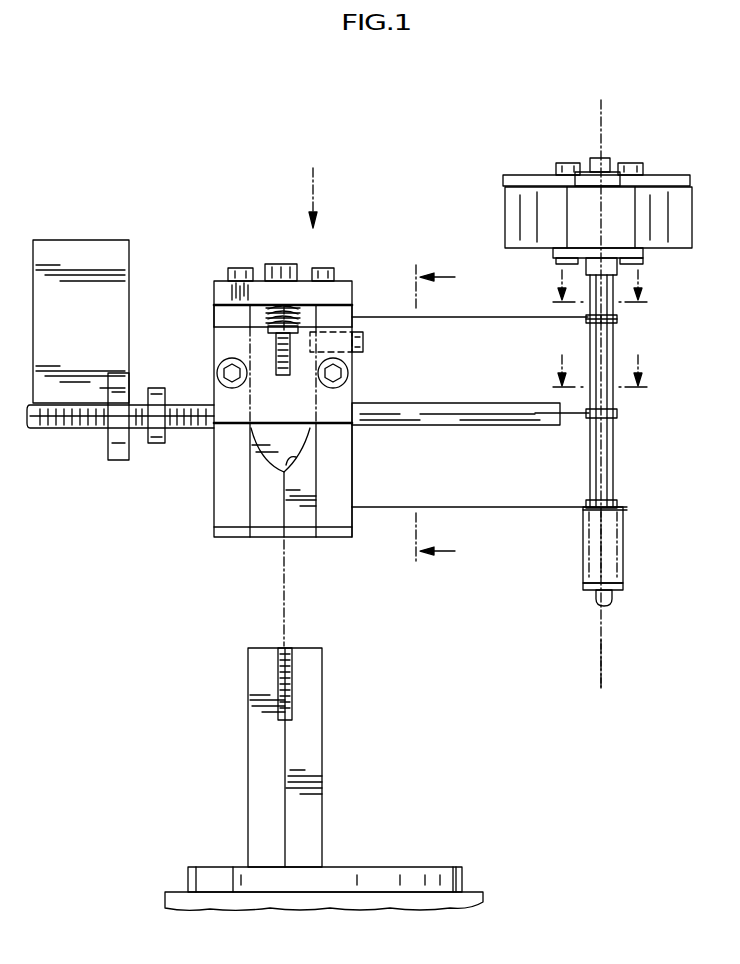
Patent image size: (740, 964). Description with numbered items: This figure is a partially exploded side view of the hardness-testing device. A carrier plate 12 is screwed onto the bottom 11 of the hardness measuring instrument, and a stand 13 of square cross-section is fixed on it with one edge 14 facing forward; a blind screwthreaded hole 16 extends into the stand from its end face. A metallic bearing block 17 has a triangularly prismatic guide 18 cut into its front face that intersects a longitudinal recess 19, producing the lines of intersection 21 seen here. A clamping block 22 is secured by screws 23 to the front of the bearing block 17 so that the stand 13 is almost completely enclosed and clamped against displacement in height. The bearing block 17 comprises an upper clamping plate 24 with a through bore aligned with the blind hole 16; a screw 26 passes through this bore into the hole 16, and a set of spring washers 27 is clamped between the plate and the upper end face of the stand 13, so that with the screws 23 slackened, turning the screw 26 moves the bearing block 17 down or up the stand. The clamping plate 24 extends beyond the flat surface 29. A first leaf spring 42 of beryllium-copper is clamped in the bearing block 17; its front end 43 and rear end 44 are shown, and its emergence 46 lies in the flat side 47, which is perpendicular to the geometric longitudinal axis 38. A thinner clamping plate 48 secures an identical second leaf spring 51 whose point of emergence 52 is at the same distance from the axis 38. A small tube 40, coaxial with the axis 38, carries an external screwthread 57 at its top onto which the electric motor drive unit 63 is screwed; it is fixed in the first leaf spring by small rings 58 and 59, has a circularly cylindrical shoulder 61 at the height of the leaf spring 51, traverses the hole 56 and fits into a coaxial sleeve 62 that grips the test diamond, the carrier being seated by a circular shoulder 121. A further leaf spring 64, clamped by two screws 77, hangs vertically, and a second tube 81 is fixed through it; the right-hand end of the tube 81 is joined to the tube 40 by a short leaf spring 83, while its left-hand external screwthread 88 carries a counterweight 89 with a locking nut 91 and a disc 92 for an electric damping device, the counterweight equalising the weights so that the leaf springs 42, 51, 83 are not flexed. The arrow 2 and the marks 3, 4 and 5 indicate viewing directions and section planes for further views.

The viewing direction arrow for FIG. 2 is at (313, 183).
The section line for FIG. 3 is at (445, 414).
The section line for FIG. 4 is at (600, 284).
The section line for FIG. 5 is at (600, 364).
The bottom of hardness measuring instrument 11 is at (468, 900).
The carrier plate 12 is at (392, 870).
The stand 13 is at (322, 745).
The edge 14 is at (285, 747).
The blind screwthreaded hole 16 is at (292, 675).
The bearing block 17 is at (214, 490).
The triangularly prismatic guide 18 is at (270, 512).
The longitudinal recess 19 is at (262, 440).
The lines of intersection 21 is at (294, 460).
The clamping block 22 is at (322, 410).
The screws 23 is at (218, 373).
The upper clamping plate 24 is at (340, 281).
The screw 26 is at (283, 264).
The set of spring washers 27 is at (275, 305).
The flat surface 29 is at (228, 515).
The geometric longitudinal axis 38 is at (603, 680).
The small tube 40 is at (616, 452).
The first leaf spring 42 is at (505, 316).
The front end 43 is at (618, 323).
The rear end 44 is at (214, 318).
The emergence 46 is at (355, 318).
The flat side 47 is at (355, 495).
The clamping plate 48 is at (300, 530).
The second leaf spring 51 is at (540, 510).
The point of emergence 52 is at (356, 512).
The hole 56 is at (626, 512).
The external screwthread 57 is at (605, 272).
The small ring 58 is at (618, 318).
The small ring 59 is at (616, 324).
The circularly cylindrical shoulder 61 is at (584, 503).
The sleeve 62 is at (624, 538).
The electric motor drive unit 63 is at (505, 200).
The leaf spring 64 is at (312, 410).
The screws 77 is at (364, 340).
The second tube 81 is at (487, 405).
The leaf spring 83 is at (578, 418).
The external screwthread 88 is at (68, 430).
The counterweight 89 is at (122, 400).
The locking nut 91 is at (155, 445).
The disc 92 is at (80, 245).
The circular shoulder 121 is at (606, 602).